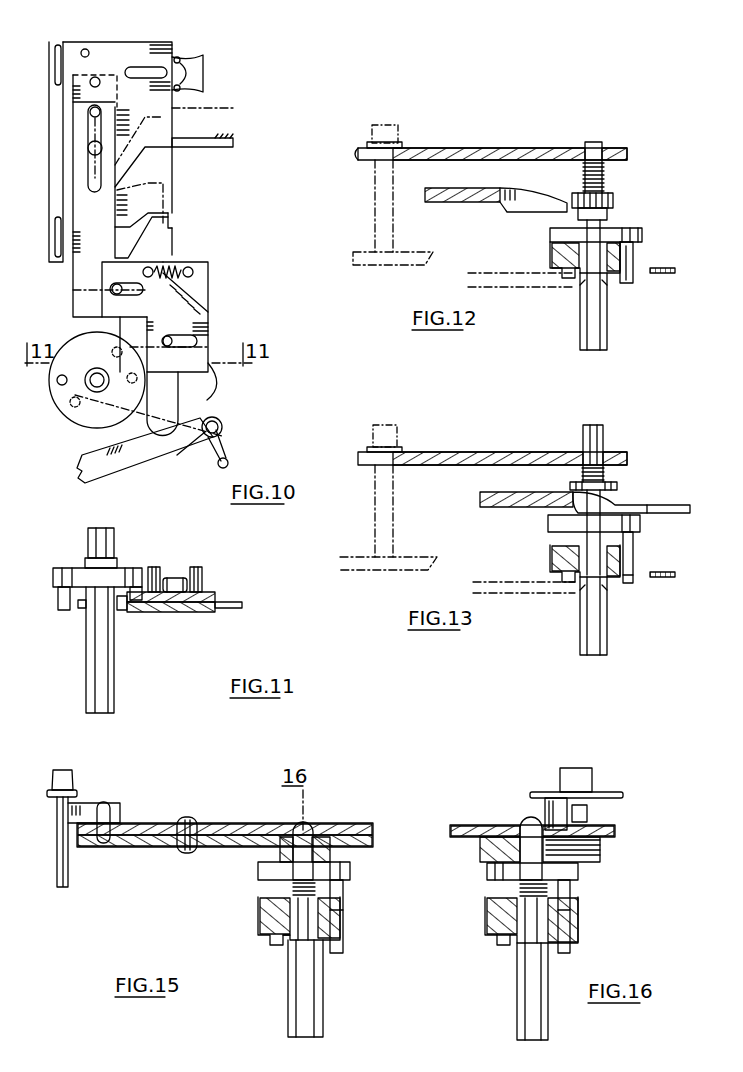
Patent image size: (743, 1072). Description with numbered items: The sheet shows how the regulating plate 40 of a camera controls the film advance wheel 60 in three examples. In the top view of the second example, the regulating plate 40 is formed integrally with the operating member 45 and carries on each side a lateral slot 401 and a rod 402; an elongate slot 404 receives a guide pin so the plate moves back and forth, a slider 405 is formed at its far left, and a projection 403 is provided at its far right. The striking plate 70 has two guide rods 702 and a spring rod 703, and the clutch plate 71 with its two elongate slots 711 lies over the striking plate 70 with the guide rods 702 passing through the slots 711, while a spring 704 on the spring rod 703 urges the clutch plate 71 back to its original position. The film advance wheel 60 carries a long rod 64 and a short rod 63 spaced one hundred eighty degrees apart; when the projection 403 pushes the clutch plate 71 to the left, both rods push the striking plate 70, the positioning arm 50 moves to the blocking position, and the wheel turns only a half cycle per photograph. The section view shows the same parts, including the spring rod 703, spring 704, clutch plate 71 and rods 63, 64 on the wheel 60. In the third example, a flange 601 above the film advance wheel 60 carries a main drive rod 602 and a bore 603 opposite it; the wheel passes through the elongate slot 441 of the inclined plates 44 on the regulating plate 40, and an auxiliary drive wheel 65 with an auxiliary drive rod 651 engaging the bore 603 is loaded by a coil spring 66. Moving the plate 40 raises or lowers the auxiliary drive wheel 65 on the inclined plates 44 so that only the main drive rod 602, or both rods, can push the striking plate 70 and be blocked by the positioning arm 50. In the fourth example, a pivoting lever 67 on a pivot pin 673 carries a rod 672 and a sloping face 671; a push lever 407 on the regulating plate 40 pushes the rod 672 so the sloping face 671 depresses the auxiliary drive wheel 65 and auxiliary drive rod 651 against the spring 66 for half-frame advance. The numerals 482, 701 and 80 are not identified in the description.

In FIG. 10, the regulating plate 40 is at (160, 175).
In FIG. 10, the lateral slot 401 is at (59, 44).
In FIG. 10, the rod 402 is at (83, 50).
In FIG. 10, the projection 403 is at (171, 218).
In FIG. 10, the elongate slot 404 is at (135, 67).
In FIG. 10, the slider 405 is at (203, 73).
In FIG. 15, the push lever 407 is at (117, 814).
In FIG. 16, the push lever 407 is at (588, 812).
In FIG. 12, the inclined plates 44 is at (539, 182).
In FIG. 13, the inclined plates 44 is at (618, 497).
In FIG. 12, the elongate slot 441 is at (612, 215).
In FIG. 13, the elongate slot 441 is at (688, 512).
In FIG. 12, the operating member 45 is at (396, 138).
In FIG. 13, the operating member 45 is at (392, 436).
In FIG. 15, the operating member 45 is at (62, 770).
In FIG. 16, the operating member 45 is at (588, 768).
In FIG. 10, the pin 482 is at (175, 57).
In FIG. 10, the positioning arm 50 is at (140, 463).
In FIG. 12, the positioning arm 50 is at (662, 268).
In FIG. 13, the positioning arm 50 is at (683, 560).
In FIG. 10, the film advance wheel 60 is at (66, 400).
In FIG. 11, the film advance wheel 60 is at (76, 570).
In FIG. 12, the film advance wheel 60 is at (605, 331).
In FIG. 13, the film advance wheel 60 is at (606, 636).
In FIG. 15, the film advance wheel 60 is at (292, 1010).
In FIG. 16, the film advance wheel 60 is at (526, 1012).
In FIG. 12, the flange 601 is at (552, 258).
In FIG. 13, the flange 601 is at (552, 556).
In FIG. 15, the flange 601 is at (262, 920).
In FIG. 16, the flange 601 is at (487, 921).
In FIG. 12, the main drive rod 602 is at (545, 287).
In FIG. 13, the main drive rod 602 is at (548, 593).
In FIG. 15, the main drive rod 602 is at (272, 946).
In FIG. 16, the main drive rod 602 is at (498, 948).
In FIG. 12, the bore 603 is at (632, 281).
In FIG. 13, the bore 603 is at (626, 583).
In FIG. 15, the bore 603 is at (338, 952).
In FIG. 16, the bore 603 is at (572, 949).
In FIG. 10, the short rod 63 is at (120, 372).
In FIG. 11, the short rod 63 is at (130, 612).
In FIG. 10, the long rod 64 is at (57, 381).
In FIG. 11, the long rod 64 is at (64, 612).
In FIG. 12, the auxiliary drive wheel 65 is at (626, 228).
In FIG. 13, the auxiliary drive wheel 65 is at (550, 524).
In FIG. 15, the auxiliary drive wheel 65 is at (346, 868).
In FIG. 16, the auxiliary drive wheel 65 is at (490, 870).
In FIG. 12, the auxiliary drive rod 651 is at (627, 283).
In FIG. 13, the auxiliary drive rod 651 is at (634, 540).
In FIG. 15, the auxiliary drive rod 651 is at (344, 888).
In FIG. 16, the auxiliary drive rod 651 is at (572, 885).
In FIG. 12, the coil spring 66 is at (608, 181).
In FIG. 13, the coil spring 66 is at (580, 474).
In FIG. 15, the coil spring 66 is at (292, 888).
In FIG. 16, the coil spring 66 is at (520, 889).
In FIG. 15, the pivoting lever 67 is at (168, 848).
In FIG. 16, the sloping face 671 is at (570, 850).
In FIG. 15, the rod 672 is at (100, 843).
In FIG. 16, the rod 672 is at (548, 813).
In FIG. 15, the pivot pin 673 is at (188, 818).
In FIG. 10, the striking plate 70 is at (80, 183).
In FIG. 11, the striking plate 70 is at (200, 613).
In FIG. 10, the slot 701 is at (97, 192).
In FIG. 10, the guide rods 702 is at (124, 293).
In FIG. 10, the spring rod 703 is at (194, 272).
In FIG. 11, the spring rod 703 is at (203, 576).
In FIG. 10, the spring 704 is at (172, 268).
In FIG. 11, the spring 704 is at (170, 578).
In FIG. 10, the clutch plate 71 is at (178, 366).
In FIG. 11, the clutch plate 71 is at (214, 595).
In FIG. 10, the elongate slots 711 is at (136, 283).
In FIG. 12, the bolt 80 is at (393, 256).
In FIG. 13, the bolt 80 is at (393, 560).